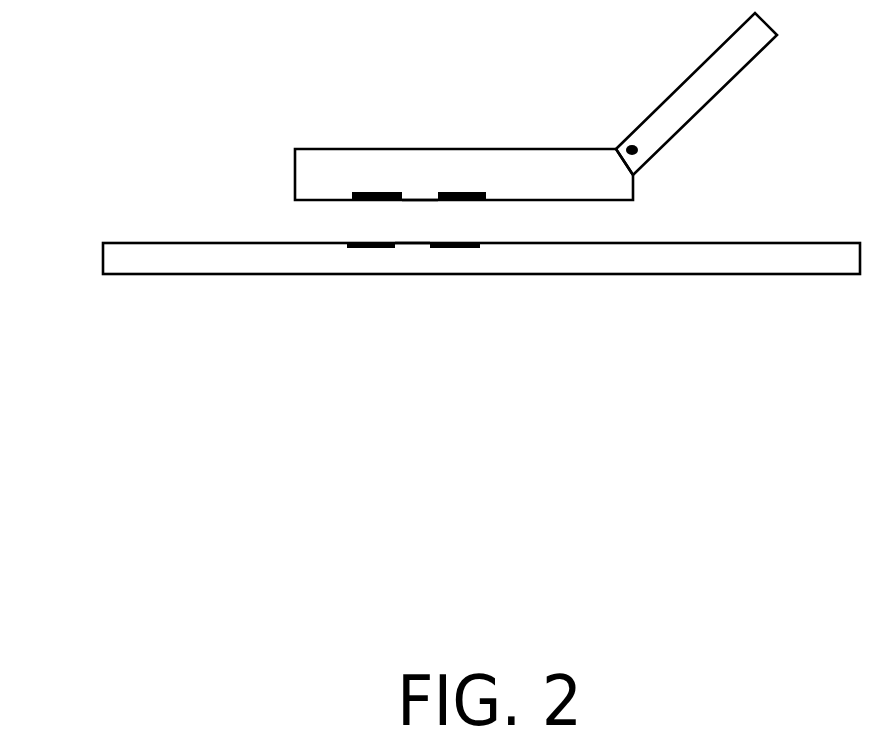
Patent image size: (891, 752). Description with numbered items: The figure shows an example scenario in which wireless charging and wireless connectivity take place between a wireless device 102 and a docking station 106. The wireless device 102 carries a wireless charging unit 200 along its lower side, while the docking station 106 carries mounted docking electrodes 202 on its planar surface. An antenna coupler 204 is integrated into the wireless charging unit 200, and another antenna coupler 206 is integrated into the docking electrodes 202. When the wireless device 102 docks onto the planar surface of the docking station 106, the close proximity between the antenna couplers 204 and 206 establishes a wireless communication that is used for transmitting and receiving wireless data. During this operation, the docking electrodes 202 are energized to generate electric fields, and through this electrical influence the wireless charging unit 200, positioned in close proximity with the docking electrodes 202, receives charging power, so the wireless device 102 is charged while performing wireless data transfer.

The wireless device 102 is at (305, 141).
The docking station 106 is at (160, 236).
The wireless charging unit 200 is at (490, 184).
The docking electrodes 202 is at (489, 254).
The antenna coupler 204 is at (403, 207).
The antenna coupler 206 is at (428, 232).